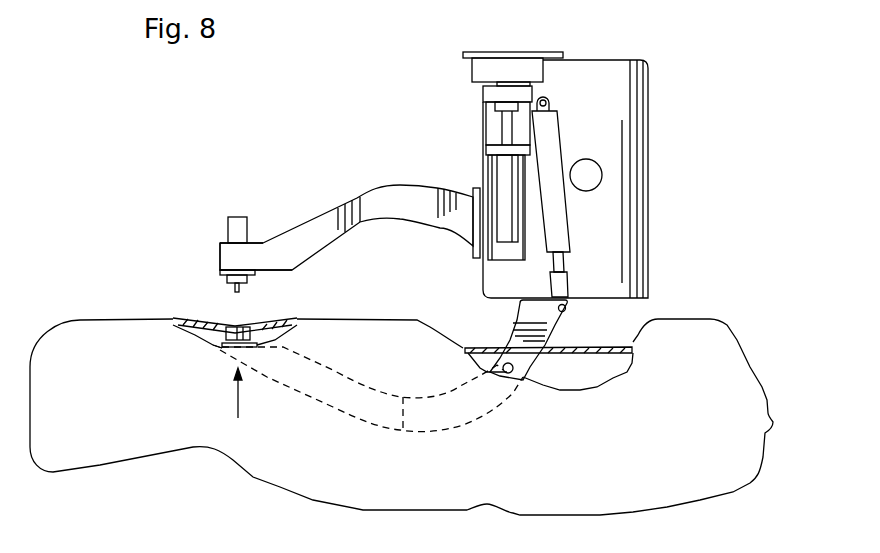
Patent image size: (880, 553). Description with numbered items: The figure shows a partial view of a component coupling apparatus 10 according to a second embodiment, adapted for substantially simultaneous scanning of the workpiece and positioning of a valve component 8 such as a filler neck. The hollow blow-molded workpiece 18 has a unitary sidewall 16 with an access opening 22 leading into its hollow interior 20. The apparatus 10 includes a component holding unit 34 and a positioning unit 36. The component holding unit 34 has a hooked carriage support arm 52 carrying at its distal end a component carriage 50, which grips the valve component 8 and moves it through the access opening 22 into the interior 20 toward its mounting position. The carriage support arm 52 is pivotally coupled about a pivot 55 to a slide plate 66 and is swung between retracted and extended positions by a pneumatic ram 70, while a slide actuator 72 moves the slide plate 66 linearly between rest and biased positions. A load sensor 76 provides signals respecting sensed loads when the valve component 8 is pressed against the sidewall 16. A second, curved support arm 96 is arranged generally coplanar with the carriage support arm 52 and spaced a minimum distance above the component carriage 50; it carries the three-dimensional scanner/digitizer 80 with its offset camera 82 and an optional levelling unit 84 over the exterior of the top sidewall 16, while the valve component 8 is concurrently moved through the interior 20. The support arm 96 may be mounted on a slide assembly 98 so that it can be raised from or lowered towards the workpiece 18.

The valve component 8 is at (250, 327).
The component coupling apparatus 10 is at (685, 158).
The workpiece sidewall 16 is at (178, 320).
The workpiece 18 is at (117, 462).
The hollow interior 20 is at (682, 462).
The access opening 22 is at (577, 347).
The component holding unit 34 is at (482, 165).
The positioning unit 36 is at (218, 278).
The component carriage 50 is at (210, 345).
The carriage support arm 52 is at (432, 420).
The pivot 55 is at (508, 377).
The slide plate 66 is at (488, 120).
The pneumatic ram 70 is at (548, 143).
The slide actuator 72 is at (500, 187).
The load sensor 76 is at (473, 67).
The scanner/digitizer 80 is at (252, 273).
The offset camera 82 is at (232, 290).
The levelling unit 84 is at (242, 230).
The support arm 96 is at (408, 213).
The slide assembly 98 is at (472, 250).